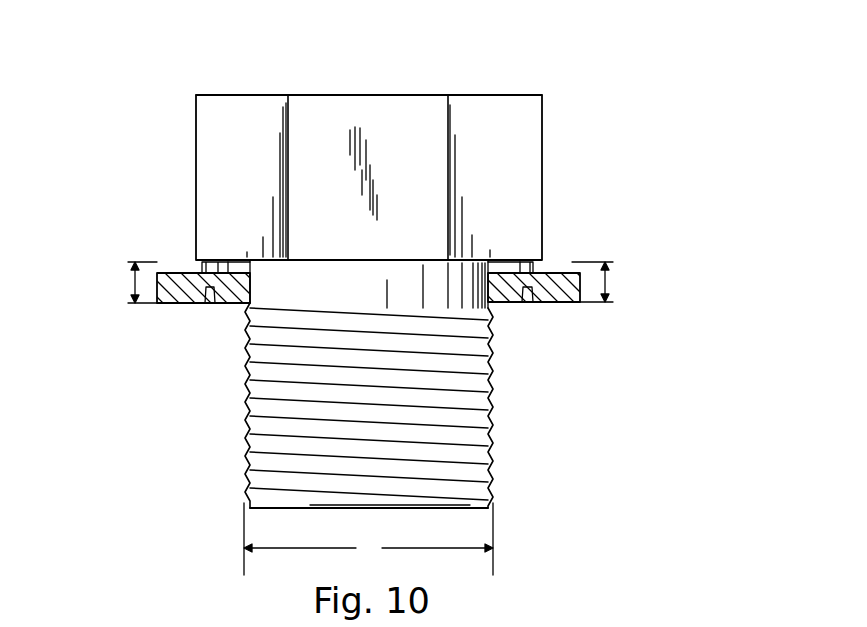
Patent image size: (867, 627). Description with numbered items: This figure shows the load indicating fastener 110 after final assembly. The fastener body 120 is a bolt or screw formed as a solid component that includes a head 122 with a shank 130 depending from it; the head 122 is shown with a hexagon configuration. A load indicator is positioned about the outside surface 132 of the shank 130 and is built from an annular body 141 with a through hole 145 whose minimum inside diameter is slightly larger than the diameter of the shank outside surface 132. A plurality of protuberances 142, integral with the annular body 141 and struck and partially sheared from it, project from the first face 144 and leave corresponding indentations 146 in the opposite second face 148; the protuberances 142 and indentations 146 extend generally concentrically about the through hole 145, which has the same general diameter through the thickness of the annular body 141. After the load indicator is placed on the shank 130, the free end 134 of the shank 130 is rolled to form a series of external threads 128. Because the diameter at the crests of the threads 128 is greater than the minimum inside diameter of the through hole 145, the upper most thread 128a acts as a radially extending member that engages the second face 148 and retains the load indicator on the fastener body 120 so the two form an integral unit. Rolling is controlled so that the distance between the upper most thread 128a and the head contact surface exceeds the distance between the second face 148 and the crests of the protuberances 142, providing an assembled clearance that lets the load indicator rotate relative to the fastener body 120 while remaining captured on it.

The load indicating fastener 110 is at (137, 388).
The fastener body 120 is at (542, 157).
The head 122 is at (540, 112).
The external threads 128 is at (490, 380).
The upper most thread 128a is at (266, 306).
The shank 130 is at (247, 460).
The outside surface 132 is at (248, 390).
The free end 134 is at (489, 492).
The annular body 141 is at (172, 305).
The protuberances 142 is at (202, 268).
The first face 144 is at (228, 270).
The through hole 145 is at (487, 269).
The indentations 146 is at (210, 304).
The second face 148 is at (565, 305).